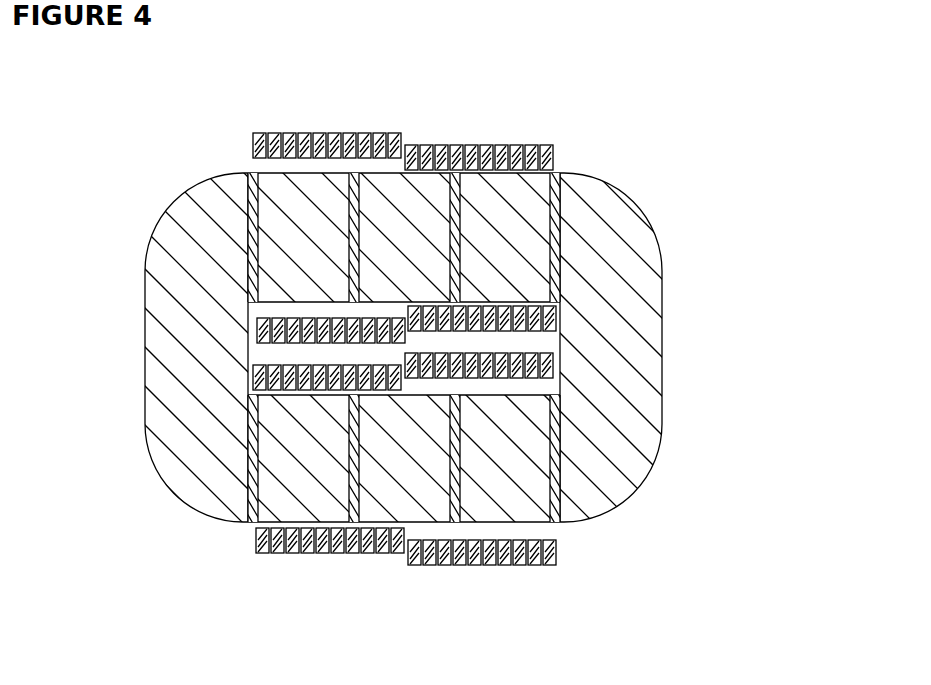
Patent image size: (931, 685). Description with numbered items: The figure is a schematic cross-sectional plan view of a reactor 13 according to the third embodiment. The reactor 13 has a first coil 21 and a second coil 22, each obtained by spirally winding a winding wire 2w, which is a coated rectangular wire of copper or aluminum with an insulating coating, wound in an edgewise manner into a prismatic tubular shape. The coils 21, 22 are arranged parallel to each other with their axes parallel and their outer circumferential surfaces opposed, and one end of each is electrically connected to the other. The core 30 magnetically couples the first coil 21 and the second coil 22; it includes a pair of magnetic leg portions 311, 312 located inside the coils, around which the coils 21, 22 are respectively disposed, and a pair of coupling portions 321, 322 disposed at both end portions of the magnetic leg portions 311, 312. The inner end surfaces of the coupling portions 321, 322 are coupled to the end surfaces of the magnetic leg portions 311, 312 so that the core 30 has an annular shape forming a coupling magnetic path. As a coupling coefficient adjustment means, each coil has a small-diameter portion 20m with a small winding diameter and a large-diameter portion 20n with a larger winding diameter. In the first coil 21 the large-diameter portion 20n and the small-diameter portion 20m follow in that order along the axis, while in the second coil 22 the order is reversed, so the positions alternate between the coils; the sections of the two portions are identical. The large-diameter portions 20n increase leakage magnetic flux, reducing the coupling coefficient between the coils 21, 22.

The reactor 13 is at (672, 115).
The first coil 21 is at (435, 113).
The second coil 22 is at (555, 607).
The large-diameter portion 20n is at (391, 127).
The small-diameter portion 20m is at (555, 112).
The winding wire 2w is at (511, 158).
The core 30 is at (465, 380).
The magnetic leg portion 311 is at (248, 163).
The magnetic leg portion 312 is at (562, 532).
The coupling portion 321 is at (150, 352).
The coupling portion 322 is at (662, 315).